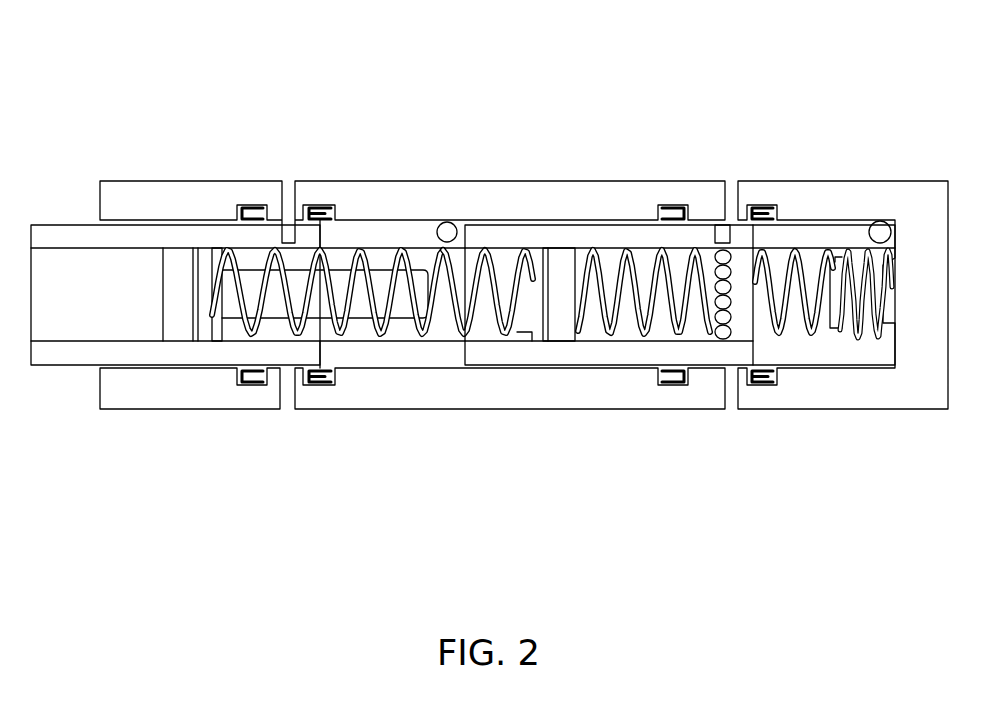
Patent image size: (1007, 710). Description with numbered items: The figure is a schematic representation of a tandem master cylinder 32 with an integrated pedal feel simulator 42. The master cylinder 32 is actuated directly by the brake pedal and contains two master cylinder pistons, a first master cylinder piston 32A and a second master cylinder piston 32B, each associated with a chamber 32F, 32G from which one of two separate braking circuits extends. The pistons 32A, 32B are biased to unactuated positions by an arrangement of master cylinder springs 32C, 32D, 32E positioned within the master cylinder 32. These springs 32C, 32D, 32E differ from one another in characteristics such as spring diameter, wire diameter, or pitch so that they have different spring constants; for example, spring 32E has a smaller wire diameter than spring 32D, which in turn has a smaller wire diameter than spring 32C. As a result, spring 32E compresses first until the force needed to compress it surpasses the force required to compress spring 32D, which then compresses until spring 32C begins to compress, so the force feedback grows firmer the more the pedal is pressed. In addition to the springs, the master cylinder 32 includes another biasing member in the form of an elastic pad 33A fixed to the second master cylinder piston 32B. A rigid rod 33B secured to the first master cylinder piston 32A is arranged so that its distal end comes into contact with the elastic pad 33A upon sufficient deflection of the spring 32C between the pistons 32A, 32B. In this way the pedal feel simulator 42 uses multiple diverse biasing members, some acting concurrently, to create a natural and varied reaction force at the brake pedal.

The master cylinder 32 is at (449, 128).
The pedal feel simulator 42 is at (568, 128).
The first master cylinder piston 32A is at (162, 350).
The second master cylinder piston 32B is at (552, 355).
The master cylinder spring 32C is at (387, 337).
The master cylinder spring 32D is at (685, 330).
The master cylinder spring 32E is at (858, 337).
The chamber 32F is at (443, 355).
The chamber 32G is at (807, 355).
The elastic pad 33A is at (530, 283).
The rod 33B is at (377, 282).